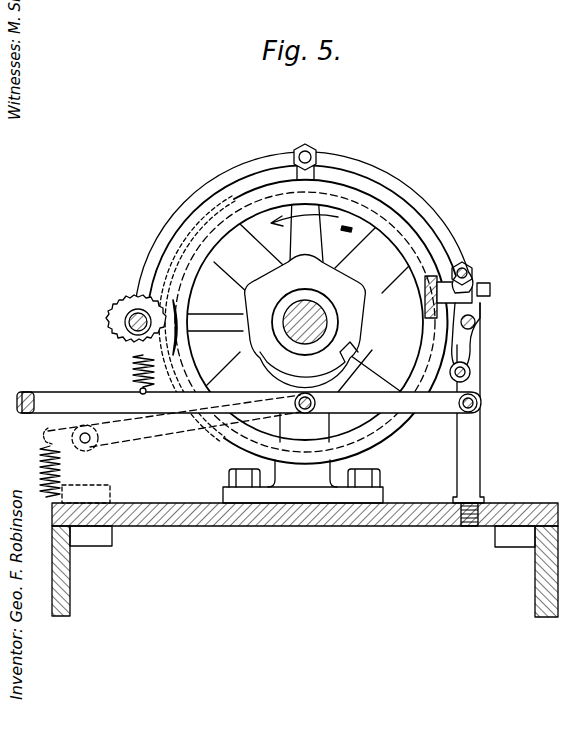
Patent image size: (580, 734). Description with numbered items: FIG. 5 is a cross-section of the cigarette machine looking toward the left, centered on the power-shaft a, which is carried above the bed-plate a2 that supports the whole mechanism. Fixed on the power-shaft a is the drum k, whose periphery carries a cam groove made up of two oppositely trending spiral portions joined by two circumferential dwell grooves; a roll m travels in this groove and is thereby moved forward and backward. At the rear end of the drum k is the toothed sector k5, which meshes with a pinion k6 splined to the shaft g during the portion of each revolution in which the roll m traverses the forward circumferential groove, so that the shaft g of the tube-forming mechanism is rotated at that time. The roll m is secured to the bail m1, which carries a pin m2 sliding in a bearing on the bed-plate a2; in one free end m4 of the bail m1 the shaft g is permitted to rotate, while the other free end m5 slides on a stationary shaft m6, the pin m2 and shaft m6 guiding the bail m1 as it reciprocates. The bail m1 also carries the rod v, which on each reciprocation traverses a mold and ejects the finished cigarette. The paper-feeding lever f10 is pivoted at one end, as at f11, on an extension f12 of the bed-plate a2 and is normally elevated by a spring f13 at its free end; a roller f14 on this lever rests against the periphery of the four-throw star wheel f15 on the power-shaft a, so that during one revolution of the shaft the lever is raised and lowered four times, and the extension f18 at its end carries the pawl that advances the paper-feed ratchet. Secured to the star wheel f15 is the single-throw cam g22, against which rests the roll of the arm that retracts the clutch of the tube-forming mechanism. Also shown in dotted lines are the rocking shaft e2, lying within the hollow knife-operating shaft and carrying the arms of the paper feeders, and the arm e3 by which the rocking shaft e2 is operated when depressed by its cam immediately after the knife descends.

The power-shaft a is at (292, 312).
The bed-plate a2 is at (305, 560).
The drum k is at (376, 207).
The toothed sector k5 is at (170, 297).
The pinion k6 is at (125, 315).
The shaft g is at (133, 310).
The single-throw cam g22 is at (350, 367).
The roll m is at (443, 302).
The bail m1 is at (238, 183).
The pin m2 is at (305, 144).
The free end of bail m4 is at (129, 324).
The free end of bail m5 is at (478, 330).
The stationary shaft m6 is at (475, 322).
The rod v is at (471, 372).
The lever f10 is at (60, 395).
The pivot f11 is at (480, 403).
The extension of bed-plate f12 is at (482, 455).
The spring f13 is at (128, 372).
The roller f14 is at (303, 416).
The star wheel f15 is at (352, 312).
The extension of lever f18 is at (30, 392).
The rocking shaft e2 is at (86, 451).
The arm e3 is at (174, 432).